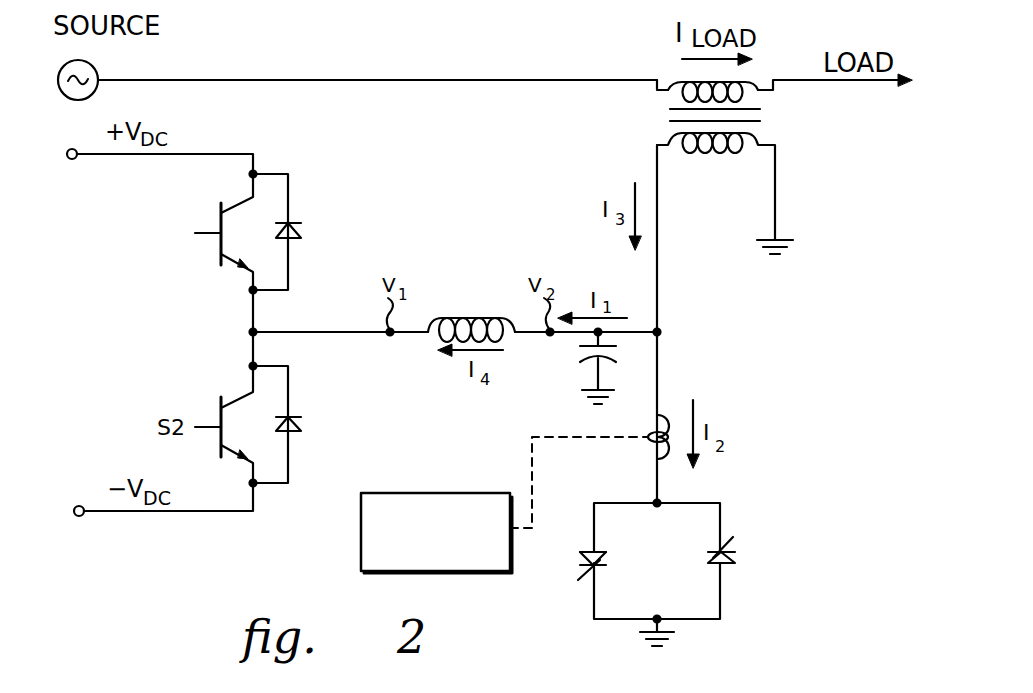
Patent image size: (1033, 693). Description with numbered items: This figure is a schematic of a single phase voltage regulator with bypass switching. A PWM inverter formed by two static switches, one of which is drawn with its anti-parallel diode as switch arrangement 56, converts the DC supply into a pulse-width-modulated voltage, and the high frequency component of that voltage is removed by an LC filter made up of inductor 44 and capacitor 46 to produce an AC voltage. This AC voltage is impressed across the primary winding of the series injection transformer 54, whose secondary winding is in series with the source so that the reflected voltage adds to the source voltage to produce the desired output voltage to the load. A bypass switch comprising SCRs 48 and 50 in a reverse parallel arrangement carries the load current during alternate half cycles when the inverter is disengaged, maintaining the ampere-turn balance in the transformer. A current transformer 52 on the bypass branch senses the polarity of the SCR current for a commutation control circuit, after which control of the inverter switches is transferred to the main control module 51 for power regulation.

The inductor 44 is at (472, 318).
The capacitor 46 is at (585, 353).
The SCR 48 is at (727, 563).
The SCR 50 is at (580, 568).
The main control module 51 is at (453, 493).
The current sensor 52 is at (663, 415).
The transformer 54 is at (673, 116).
The inverter switch with anti-parallel diode 56 is at (262, 217).